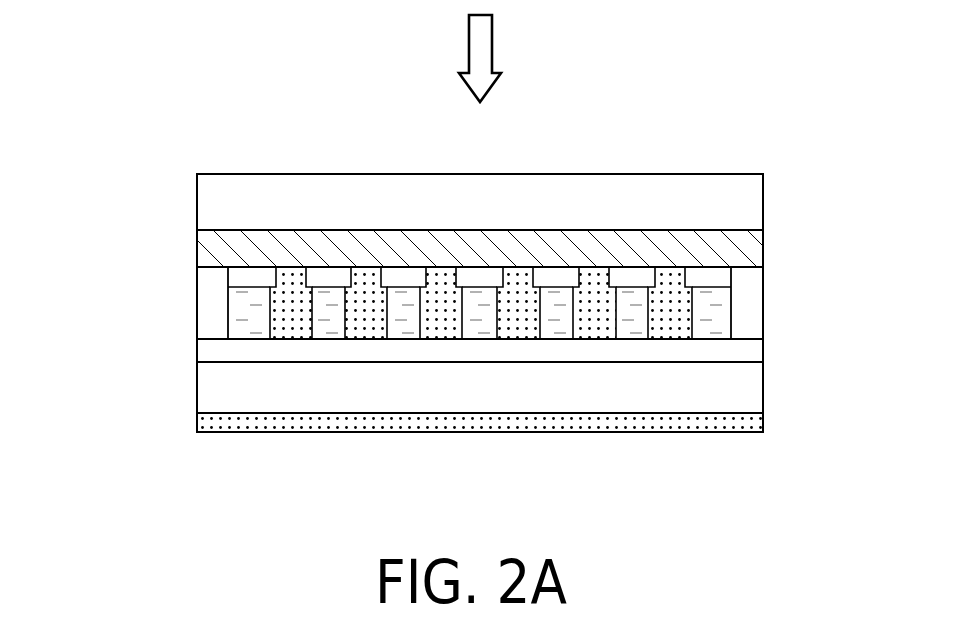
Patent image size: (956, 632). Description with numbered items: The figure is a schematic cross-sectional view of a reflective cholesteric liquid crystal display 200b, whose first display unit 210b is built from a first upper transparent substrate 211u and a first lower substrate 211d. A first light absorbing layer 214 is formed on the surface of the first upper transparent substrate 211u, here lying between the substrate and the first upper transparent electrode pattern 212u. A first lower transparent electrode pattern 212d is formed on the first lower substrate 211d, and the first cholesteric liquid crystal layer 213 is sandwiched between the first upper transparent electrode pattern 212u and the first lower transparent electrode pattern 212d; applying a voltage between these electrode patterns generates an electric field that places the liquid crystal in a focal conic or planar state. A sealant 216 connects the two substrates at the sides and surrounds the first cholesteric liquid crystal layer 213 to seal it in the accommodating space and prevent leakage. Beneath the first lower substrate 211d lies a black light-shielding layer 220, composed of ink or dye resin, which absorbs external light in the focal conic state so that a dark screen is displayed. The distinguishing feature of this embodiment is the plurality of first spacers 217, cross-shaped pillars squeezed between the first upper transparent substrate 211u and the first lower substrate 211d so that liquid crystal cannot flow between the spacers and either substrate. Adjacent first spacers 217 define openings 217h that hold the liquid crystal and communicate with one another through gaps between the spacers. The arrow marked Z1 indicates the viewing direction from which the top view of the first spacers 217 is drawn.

The reflective cholesteric liquid crystal display 200b is at (152, 22).
The direction Z1 is at (483, 43).
The first display unit 210b is at (148, 278).
The first upper transparent substrate 211u is at (753, 197).
The first light absorbing layer 214 is at (753, 251).
The sealant 216 is at (207, 302).
The first upper transparent electrode pattern 212u is at (722, 276).
The first cholesteric liquid crystal layer 213 is at (710, 318).
The first spacers 217 is at (290, 300).
The first lower transparent electrode pattern 212d is at (747, 351).
The first lower substrate 211d is at (747, 389).
The black light-shielding layer 220 is at (197, 425).
The openings 217h is at (329, 341).